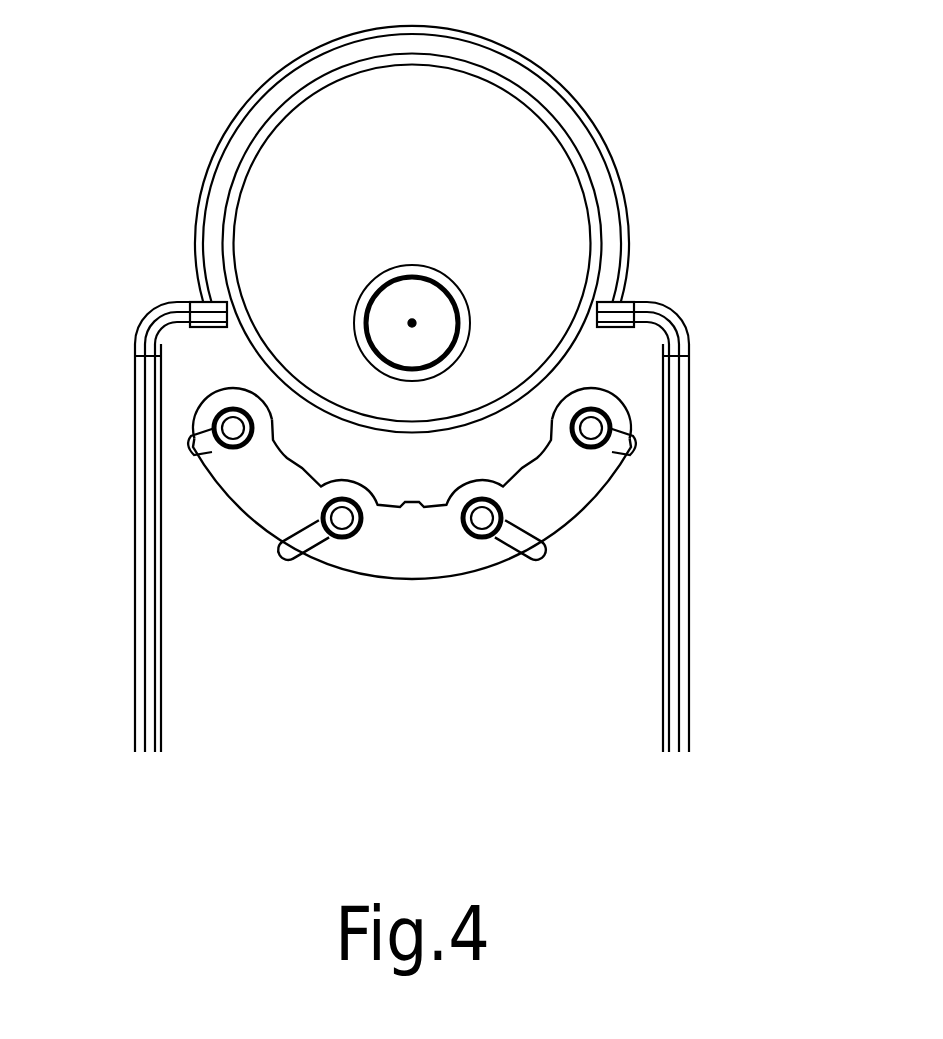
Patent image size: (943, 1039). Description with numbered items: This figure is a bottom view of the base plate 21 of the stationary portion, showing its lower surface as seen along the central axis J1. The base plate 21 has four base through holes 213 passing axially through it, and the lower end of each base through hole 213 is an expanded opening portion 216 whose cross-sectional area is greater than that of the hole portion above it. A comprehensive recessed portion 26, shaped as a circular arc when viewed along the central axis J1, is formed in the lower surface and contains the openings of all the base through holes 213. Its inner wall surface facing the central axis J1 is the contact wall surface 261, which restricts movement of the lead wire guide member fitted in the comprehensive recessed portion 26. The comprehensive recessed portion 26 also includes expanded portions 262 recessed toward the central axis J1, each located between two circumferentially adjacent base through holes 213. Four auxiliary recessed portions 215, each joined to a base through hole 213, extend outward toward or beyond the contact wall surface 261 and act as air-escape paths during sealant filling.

The base plate 21 is at (262, 192).
The base through holes 213 is at (342, 518).
The auxiliary recessed portions 215 is at (295, 483).
The expanded opening portions 216 is at (344, 553).
The comprehensive recessed portion 26 is at (413, 510).
The contact wall surface 261 is at (423, 573).
The expanded portions 262 is at (303, 542).
The central axis J1 is at (416, 321).